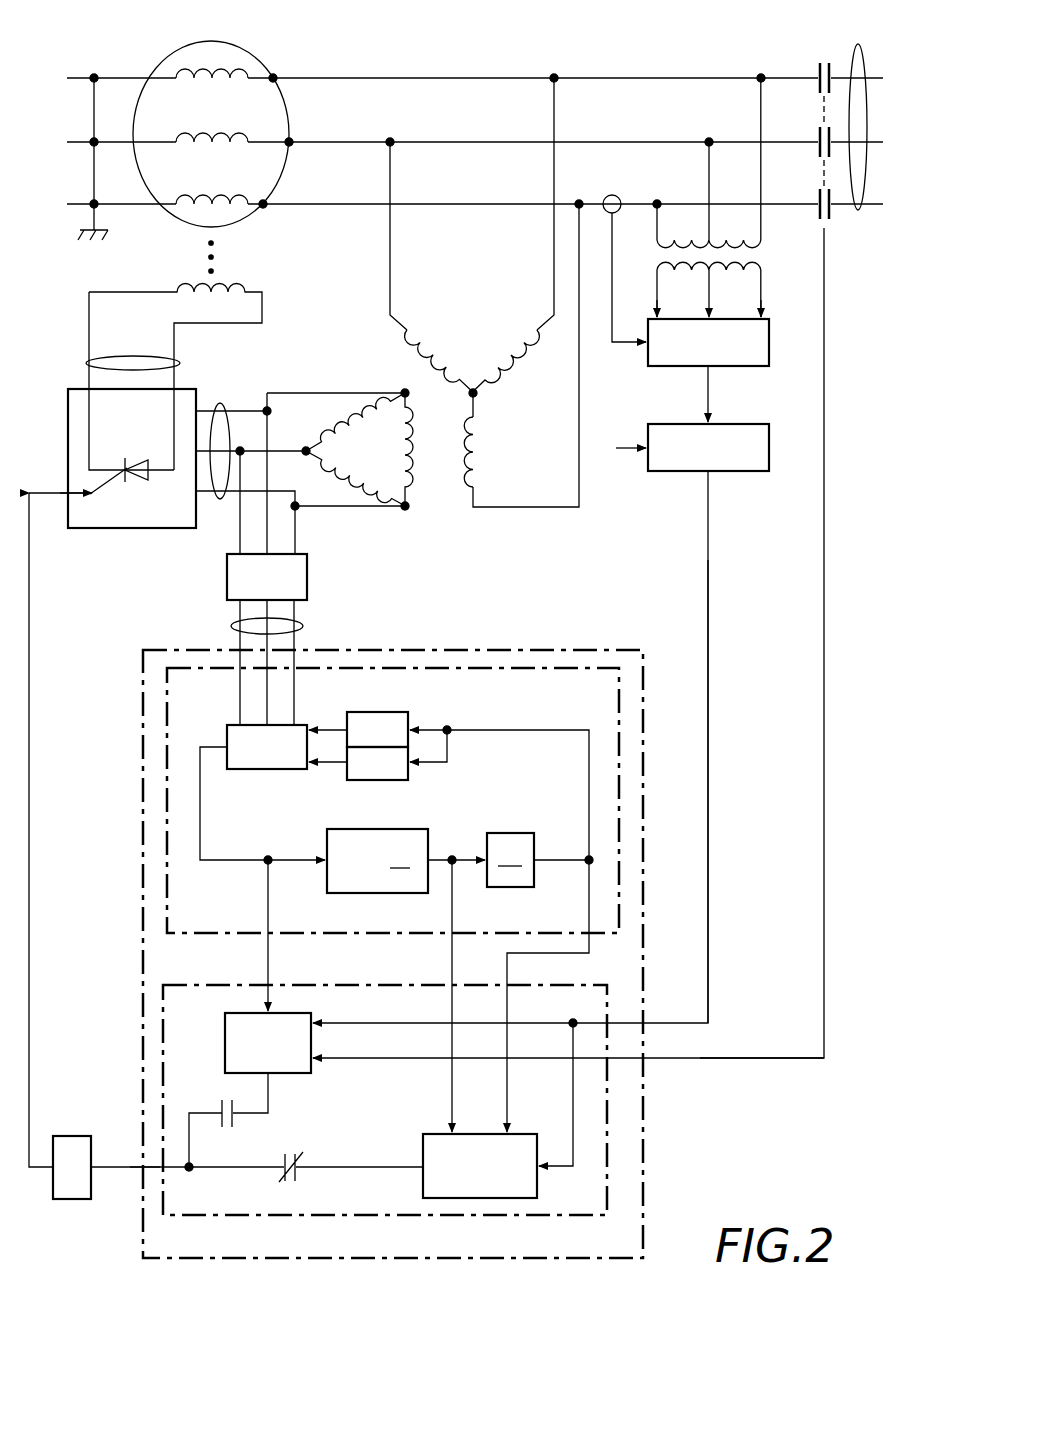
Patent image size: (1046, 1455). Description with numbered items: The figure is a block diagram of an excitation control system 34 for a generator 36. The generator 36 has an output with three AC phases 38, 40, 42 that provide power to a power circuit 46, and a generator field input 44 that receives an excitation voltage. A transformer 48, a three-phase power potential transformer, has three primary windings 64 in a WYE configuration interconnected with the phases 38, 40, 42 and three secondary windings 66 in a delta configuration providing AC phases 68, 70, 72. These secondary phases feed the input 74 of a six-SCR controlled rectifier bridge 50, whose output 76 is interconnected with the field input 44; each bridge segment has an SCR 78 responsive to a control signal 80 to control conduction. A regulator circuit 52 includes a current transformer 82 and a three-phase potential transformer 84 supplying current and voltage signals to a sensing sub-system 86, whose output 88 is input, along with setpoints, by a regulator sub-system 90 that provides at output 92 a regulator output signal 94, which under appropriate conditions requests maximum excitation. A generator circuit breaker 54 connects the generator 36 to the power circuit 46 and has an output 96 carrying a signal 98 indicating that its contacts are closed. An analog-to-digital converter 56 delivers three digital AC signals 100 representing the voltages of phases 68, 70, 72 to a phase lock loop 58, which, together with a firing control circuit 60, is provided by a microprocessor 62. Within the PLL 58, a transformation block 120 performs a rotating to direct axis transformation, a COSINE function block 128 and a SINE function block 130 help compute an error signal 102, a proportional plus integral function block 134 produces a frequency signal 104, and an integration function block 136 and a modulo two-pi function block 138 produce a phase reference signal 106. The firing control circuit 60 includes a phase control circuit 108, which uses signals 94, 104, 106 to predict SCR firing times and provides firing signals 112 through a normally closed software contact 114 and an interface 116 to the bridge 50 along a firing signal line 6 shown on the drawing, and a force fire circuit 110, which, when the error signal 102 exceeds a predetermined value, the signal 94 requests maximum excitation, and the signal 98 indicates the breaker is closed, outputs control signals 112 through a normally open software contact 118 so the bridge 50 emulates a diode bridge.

The control signal line 6 is at (104, 1176).
The excitation control system 34 is at (770, 1152).
The generator 36 is at (278, 244).
The AC phase A 38 is at (445, 78).
The AC phase B 40 is at (477, 142).
The AC phase C 42 is at (477, 204).
The generator field input 44 is at (184, 288).
The power circuit 46 is at (858, 62).
The transformer 48 is at (459, 457).
The controlled rectifier bridge 50 is at (112, 478).
The regulator circuit 52 is at (569, 671).
The generator circuit breaker 54 is at (804, 60).
The analog-to-digital converter 56 is at (227, 580).
The phase lock loop 58 is at (393, 900).
The firing control circuit 60 is at (385, 1120).
The microprocessor 62 is at (448, 650).
The primary windings 64 is at (500, 386).
The secondary windings 66 is at (326, 432).
The AC phase a 68 is at (290, 393).
The AC phase b 70 is at (280, 452).
The AC phase c 72 is at (336, 508).
The bridge input 74 is at (220, 404).
The bridge output 76 is at (87, 365).
The SCR 78 is at (140, 480).
The control signal 80 is at (100, 489).
The current transformer 82 is at (610, 196).
The three-phase potential transformer 84 is at (758, 258).
The sensing sub-system 86 is at (770, 344).
The sensing sub-system output 88 is at (710, 383).
The regulator sub-system 90 is at (770, 450).
The regulator output 92 is at (710, 474).
The regulator output signal 94 is at (710, 618).
The circuit breaker output 96 is at (826, 231).
The breaker closed signal 98 is at (770, 1058).
The digital AC signals 100 is at (232, 630).
The error signal 102 is at (268, 906).
The frequency signal 104 is at (452, 958).
The phase reference signal 106 is at (589, 915).
The phase control circuit 108 is at (423, 1156).
The force fire circuit 110 is at (286, 1073).
The firing signals 112 is at (126, 1170).
The normally closed software contact 114 is at (283, 1180).
The interface 116 is at (72, 1136).
The normally open software contact 118 is at (222, 1108).
The transformation block 120 is at (228, 736).
The COSINE function block 128 is at (400, 780).
The SINE function block 130 is at (382, 712).
The proportional plus integral function block 134 is at (328, 828).
The integration function block 136 is at (551, 843).
The modulo 2π function block 138 is at (499, 833).